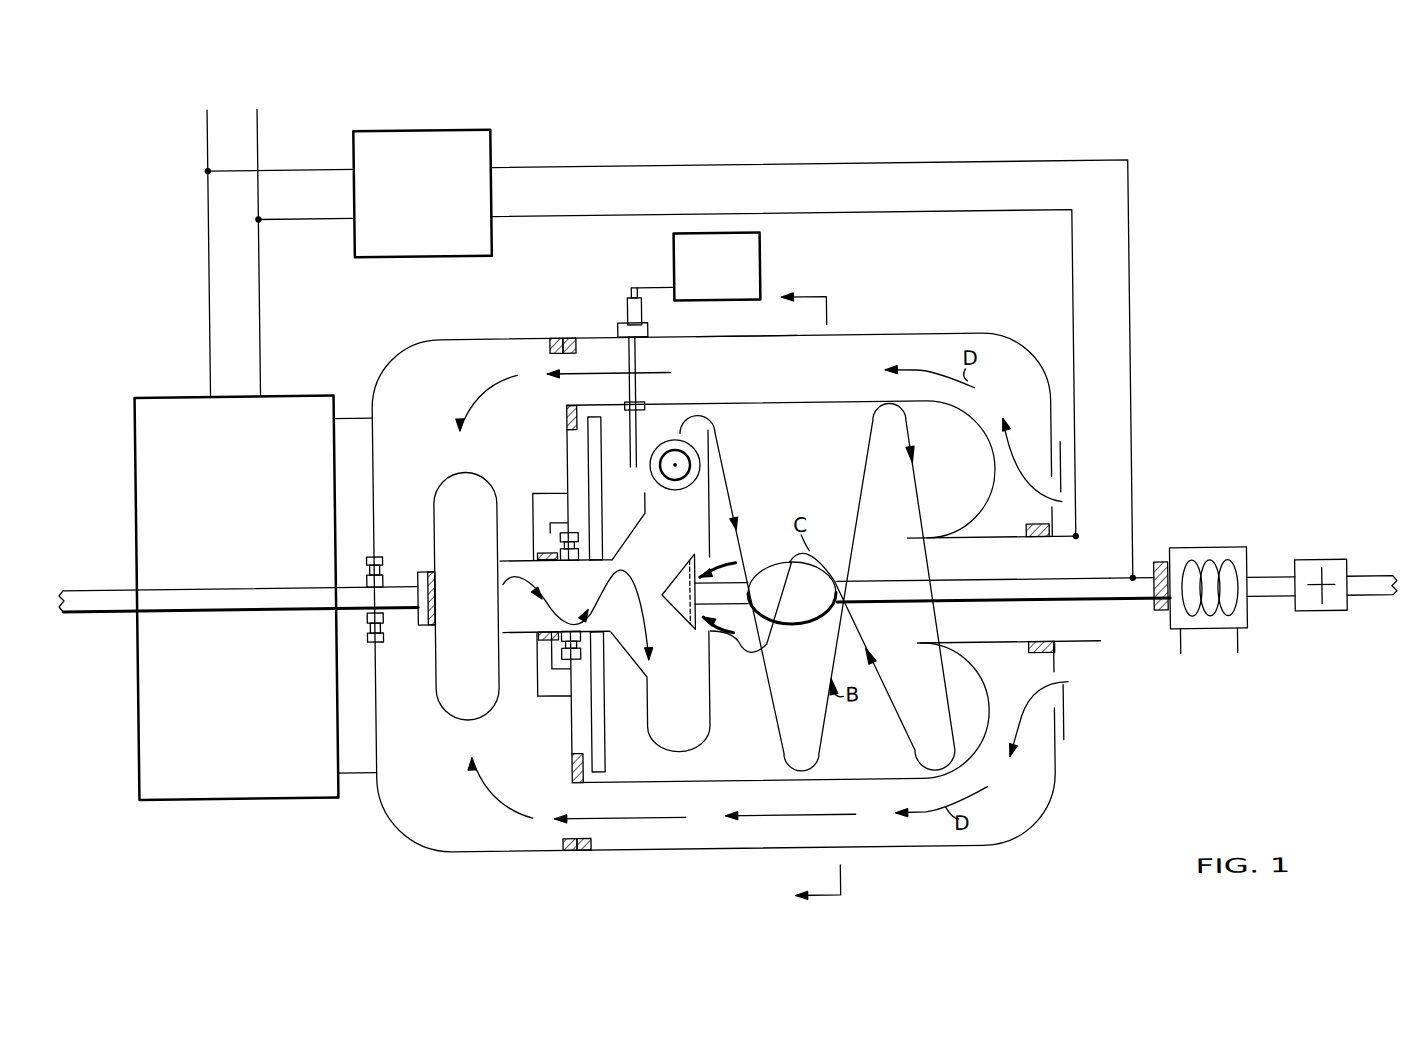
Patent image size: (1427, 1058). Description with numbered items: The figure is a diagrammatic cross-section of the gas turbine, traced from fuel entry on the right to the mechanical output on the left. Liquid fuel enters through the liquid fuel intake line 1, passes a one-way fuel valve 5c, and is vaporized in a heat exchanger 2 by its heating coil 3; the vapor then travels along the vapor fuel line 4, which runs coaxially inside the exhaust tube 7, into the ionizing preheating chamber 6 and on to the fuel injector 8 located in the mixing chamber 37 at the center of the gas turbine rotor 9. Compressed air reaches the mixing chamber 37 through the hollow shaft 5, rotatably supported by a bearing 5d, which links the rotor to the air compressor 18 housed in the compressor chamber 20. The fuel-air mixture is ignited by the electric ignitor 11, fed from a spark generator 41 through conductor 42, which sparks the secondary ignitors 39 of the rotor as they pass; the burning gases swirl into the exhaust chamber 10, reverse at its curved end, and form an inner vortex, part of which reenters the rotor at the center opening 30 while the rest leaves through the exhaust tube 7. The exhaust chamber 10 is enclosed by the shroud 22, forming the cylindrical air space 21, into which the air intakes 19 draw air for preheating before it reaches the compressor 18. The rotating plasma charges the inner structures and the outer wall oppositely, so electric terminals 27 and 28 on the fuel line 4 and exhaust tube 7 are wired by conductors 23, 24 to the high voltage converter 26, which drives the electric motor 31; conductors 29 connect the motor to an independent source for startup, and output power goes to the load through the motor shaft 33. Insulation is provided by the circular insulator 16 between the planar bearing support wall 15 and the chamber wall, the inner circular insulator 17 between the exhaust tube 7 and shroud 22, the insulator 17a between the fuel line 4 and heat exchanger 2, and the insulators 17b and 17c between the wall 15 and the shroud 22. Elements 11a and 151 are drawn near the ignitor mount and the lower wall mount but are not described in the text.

The liquid fuel intake line 1 is at (1370, 584).
The heat exchanger 2 is at (1200, 554).
The heating coil 3 is at (1212, 634).
The vapor fuel line 4 is at (1104, 604).
The hollow shaft 5 is at (819, 593).
The one-way fuel valve 5c is at (1322, 618).
The bearing 5d is at (560, 648).
The ionizing preheating chamber 6 is at (793, 620).
The exhaust tube 7 is at (1090, 541).
The fuel injector 8 is at (694, 570).
The gas turbine rotor 9 is at (710, 716).
The exhaust chamber 10 is at (783, 591).
The electric ignitor 11 is at (634, 447).
The plate mount 11a is at (646, 405).
The planar bearing support wall 15 is at (570, 752).
The mounting bracket 151 is at (540, 694).
The circular insulator 16 is at (575, 404).
The inner circular insulator 17 is at (1028, 650).
The circular electric insulator 17a is at (1160, 567).
The circular electric insulator 17b is at (577, 336).
The circular electric insulator 17c is at (556, 340).
The air compressor 18 is at (438, 698).
The air intakes 19 is at (1068, 686).
The compressor chamber 20 is at (734, 594).
The cylindrical air space 21 is at (868, 346).
The shroud 22 is at (752, 337).
The conductor 23 is at (1135, 345).
The conductor 24 is at (1079, 389).
The high voltage converter 26 is at (420, 254).
The electric terminal 27 is at (1130, 583).
The electric terminal 28 is at (1079, 538).
The conductors 29 is at (256, 206).
The center opening 30 is at (718, 636).
The electric motor 31 is at (256, 597).
The motor shaft 33 is at (92, 606).
The mixing chamber 37 is at (576, 495).
The secondary ignitors 39 is at (668, 448).
The spark generator 41 is at (765, 241).
The conductor 42 is at (645, 287).